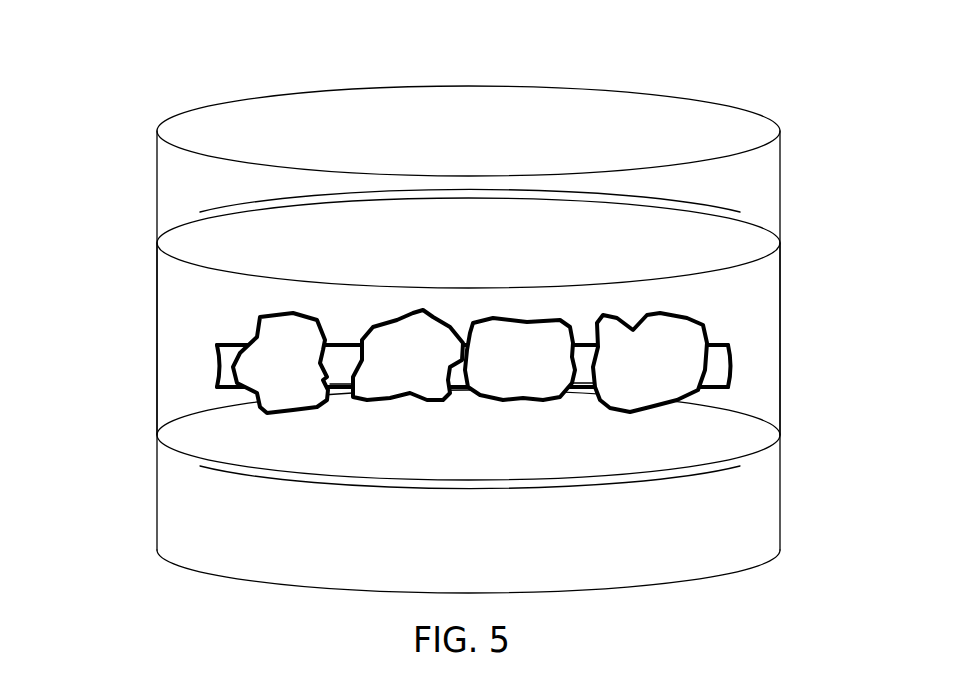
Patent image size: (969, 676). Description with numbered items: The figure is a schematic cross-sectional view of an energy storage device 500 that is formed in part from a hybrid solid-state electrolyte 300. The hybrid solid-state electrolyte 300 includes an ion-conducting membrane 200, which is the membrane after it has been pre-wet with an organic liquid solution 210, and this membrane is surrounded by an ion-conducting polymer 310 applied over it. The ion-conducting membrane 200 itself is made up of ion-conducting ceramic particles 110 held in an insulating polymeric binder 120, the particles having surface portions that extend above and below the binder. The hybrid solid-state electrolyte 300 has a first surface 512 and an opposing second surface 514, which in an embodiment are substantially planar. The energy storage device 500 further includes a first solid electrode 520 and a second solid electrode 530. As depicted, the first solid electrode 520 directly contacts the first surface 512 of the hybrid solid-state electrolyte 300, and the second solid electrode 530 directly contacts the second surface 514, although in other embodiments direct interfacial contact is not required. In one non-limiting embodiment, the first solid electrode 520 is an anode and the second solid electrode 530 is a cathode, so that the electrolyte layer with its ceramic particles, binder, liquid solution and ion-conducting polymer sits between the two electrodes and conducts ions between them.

The energy storage device 500 is at (205, 52).
The first solid electrode 520 is at (197, 180).
The second solid electrode 530 is at (180, 510).
The first surface 512 is at (688, 293).
The second surface 514 is at (662, 451).
The hybrid solid-state electrolyte 300 is at (785, 240).
The ion-conducting polymer 310 is at (172, 280).
The ion-conducting membrane 200 is at (147, 299).
The organic liquid solution 210 is at (525, 300).
The ion-conducting ceramic particles 110 is at (682, 340).
The insulating polymeric binder 120 is at (577, 388).